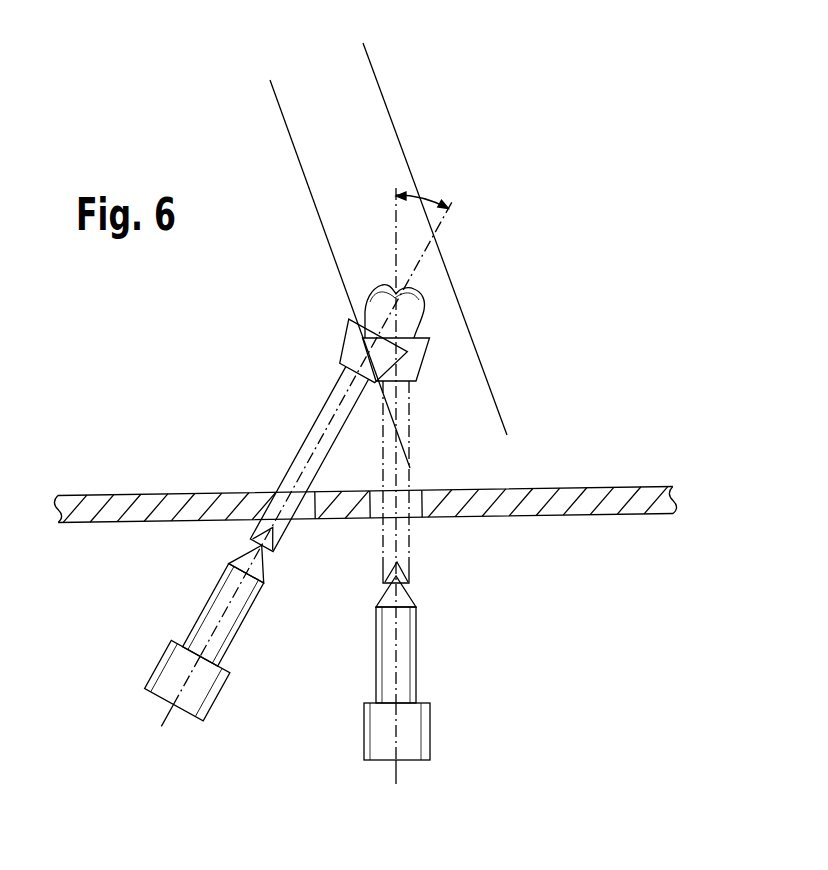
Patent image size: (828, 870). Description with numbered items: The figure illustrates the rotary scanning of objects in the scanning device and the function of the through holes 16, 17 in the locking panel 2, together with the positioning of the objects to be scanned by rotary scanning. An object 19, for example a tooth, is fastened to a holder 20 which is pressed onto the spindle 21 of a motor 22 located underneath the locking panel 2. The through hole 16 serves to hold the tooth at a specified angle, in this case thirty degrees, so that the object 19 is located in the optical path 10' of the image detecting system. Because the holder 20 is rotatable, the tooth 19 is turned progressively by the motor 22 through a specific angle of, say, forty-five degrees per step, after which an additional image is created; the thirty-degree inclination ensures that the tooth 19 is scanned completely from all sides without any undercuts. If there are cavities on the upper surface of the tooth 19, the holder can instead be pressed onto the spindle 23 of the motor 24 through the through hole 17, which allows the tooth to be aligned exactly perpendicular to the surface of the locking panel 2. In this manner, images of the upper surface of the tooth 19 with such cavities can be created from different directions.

The optical path 10' is at (388, 247).
The locking panel 2 is at (607, 499).
The through hole 16 is at (263, 494).
The through hole 17 is at (412, 512).
The object 19 is at (412, 307).
The holder 20 is at (346, 386).
The spindle 21 is at (205, 607).
The motor 22 is at (163, 677).
The spindle 23 is at (413, 647).
The motor 24 is at (421, 730).